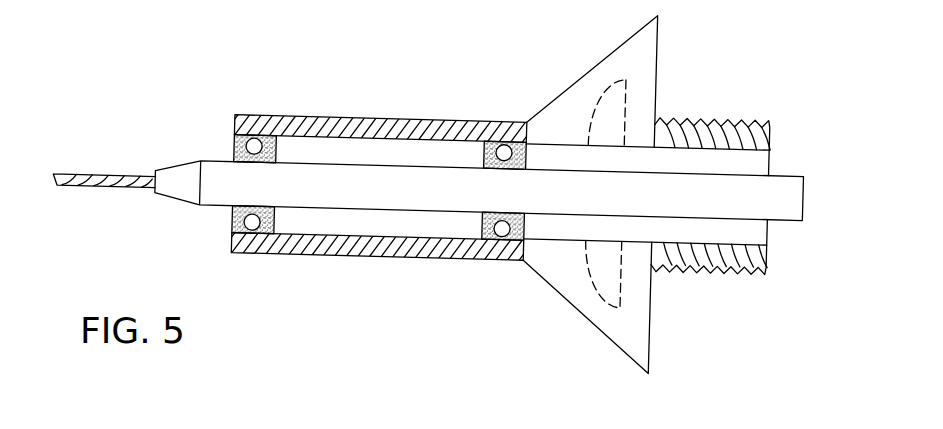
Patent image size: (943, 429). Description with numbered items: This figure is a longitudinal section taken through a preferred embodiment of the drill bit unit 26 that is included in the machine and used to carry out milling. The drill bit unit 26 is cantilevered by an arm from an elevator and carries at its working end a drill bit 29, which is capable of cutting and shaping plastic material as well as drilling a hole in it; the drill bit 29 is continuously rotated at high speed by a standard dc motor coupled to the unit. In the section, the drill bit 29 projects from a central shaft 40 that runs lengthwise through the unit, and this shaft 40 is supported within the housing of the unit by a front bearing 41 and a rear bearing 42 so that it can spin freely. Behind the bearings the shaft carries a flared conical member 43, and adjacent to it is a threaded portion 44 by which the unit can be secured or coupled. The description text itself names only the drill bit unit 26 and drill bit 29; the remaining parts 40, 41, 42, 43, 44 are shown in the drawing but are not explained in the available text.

The drill bit unit 26 is at (431, 121).
The drill bit 29 is at (94, 174).
The spindle shaft 40 is at (375, 186).
The front bearing 41 is at (251, 141).
The rear bearing 42 is at (502, 146).
The conical flange 43 is at (658, 43).
The threaded portion 44 is at (725, 120).